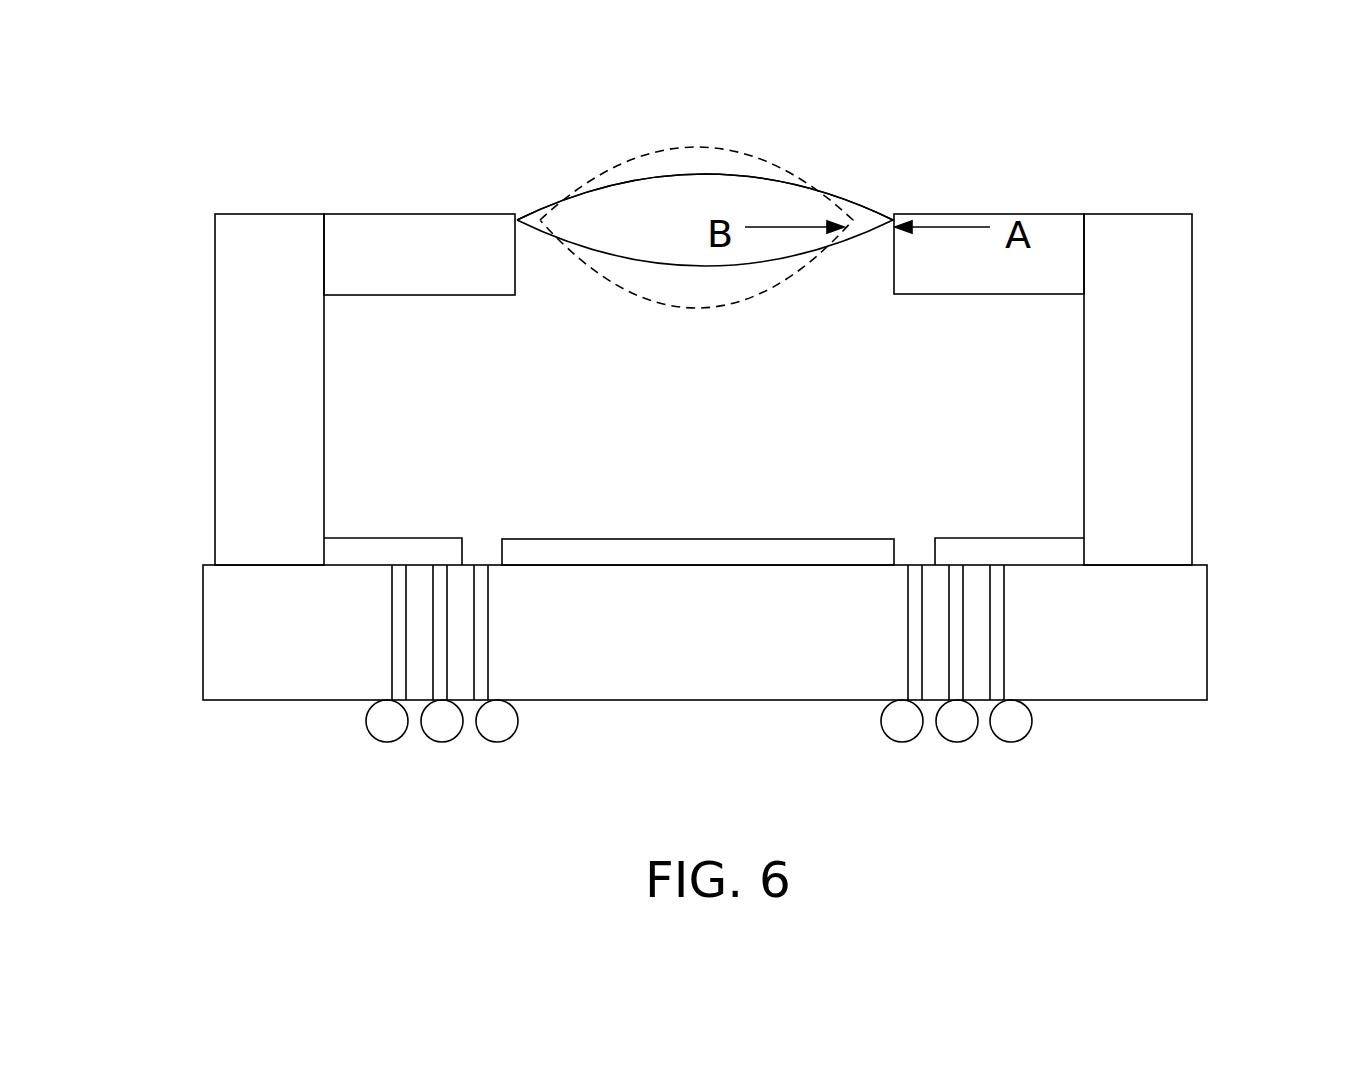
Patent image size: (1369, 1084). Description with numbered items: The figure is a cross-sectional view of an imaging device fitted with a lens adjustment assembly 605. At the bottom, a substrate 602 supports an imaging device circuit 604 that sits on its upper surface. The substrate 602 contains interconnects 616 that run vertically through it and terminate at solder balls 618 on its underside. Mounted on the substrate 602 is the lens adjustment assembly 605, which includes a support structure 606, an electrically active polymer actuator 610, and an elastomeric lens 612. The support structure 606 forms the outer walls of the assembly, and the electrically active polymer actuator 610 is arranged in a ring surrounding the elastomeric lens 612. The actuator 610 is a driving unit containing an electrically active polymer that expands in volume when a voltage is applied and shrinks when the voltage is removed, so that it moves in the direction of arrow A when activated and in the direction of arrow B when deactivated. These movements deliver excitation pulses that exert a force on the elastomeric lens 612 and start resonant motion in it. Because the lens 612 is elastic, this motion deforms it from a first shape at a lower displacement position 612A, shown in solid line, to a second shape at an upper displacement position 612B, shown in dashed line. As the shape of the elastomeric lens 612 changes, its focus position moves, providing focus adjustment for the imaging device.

The substrate 602 is at (1208, 587).
The imaging device circuit 604 is at (677, 539).
The lens adjustment assembly 605 is at (188, 215).
The support structure 606 is at (1195, 343).
The electrically active polymer actuator 610 is at (1030, 214).
The elastomeric lens 612 is at (542, 202).
The lower displacement position 612A is at (703, 174).
The upper displacement position 612B is at (703, 147).
The interconnects 616 is at (1005, 643).
The solder balls 618 is at (1024, 743).